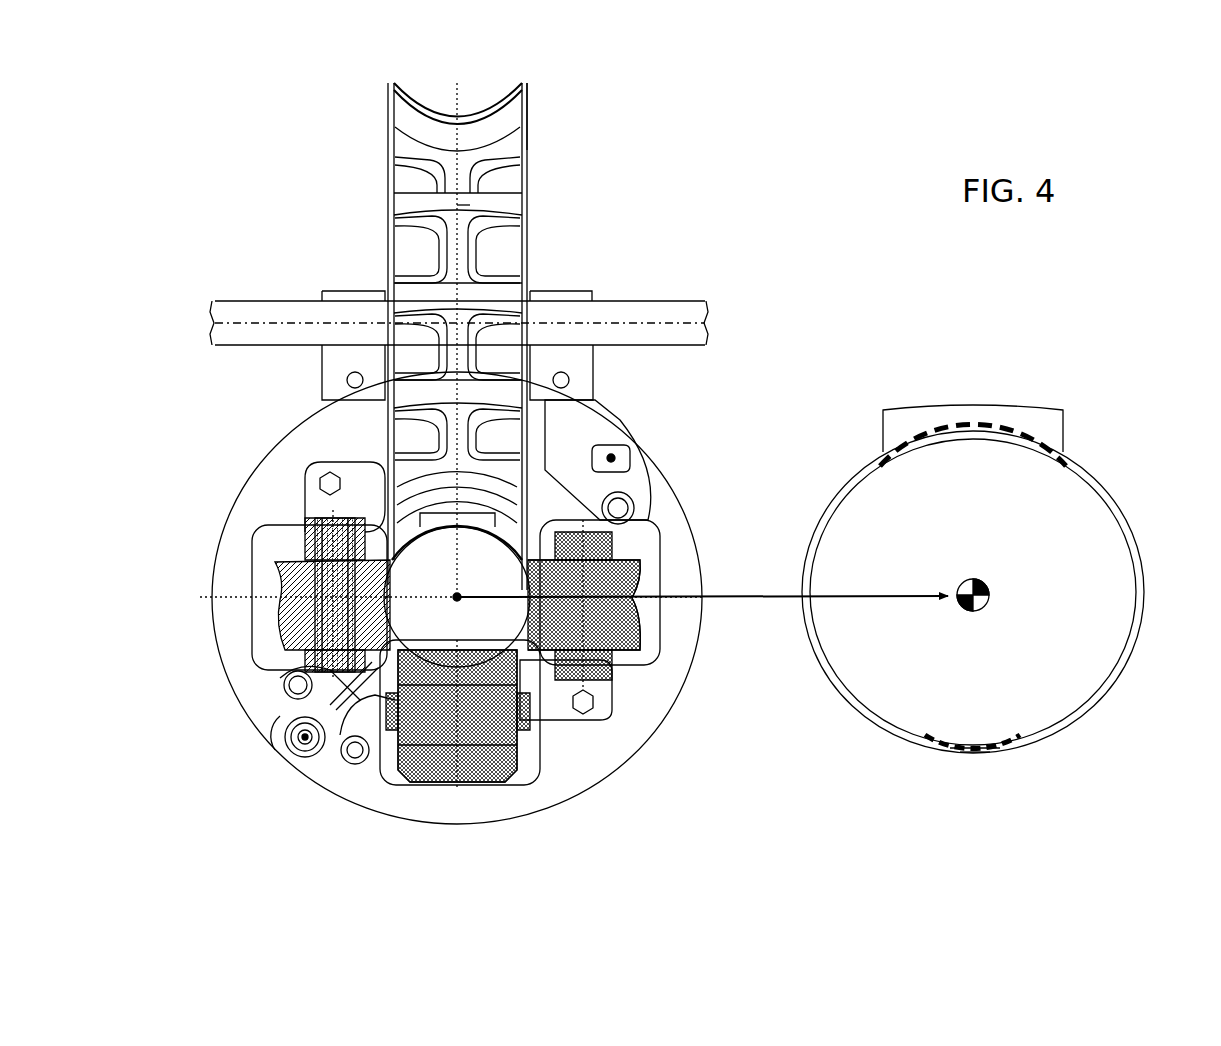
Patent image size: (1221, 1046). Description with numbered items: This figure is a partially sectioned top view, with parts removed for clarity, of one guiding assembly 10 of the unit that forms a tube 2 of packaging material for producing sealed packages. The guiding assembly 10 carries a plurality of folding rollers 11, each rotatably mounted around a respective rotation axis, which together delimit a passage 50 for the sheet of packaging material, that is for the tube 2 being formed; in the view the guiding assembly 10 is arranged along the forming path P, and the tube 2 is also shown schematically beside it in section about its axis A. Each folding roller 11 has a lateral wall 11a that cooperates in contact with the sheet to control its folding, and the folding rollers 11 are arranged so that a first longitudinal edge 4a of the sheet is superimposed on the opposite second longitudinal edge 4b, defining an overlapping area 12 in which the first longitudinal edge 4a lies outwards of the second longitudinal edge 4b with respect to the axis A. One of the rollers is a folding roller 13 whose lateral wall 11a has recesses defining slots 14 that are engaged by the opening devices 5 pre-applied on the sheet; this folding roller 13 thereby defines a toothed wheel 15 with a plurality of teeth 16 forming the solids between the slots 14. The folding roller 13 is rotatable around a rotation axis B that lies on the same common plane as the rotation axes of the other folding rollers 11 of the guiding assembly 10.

The tube 2 is at (1140, 640).
The first longitudinal edge 4a is at (985, 755).
The second longitudinal edge 4b is at (975, 745).
The opening device 5 is at (450, 515).
The guiding assembly 10 is at (265, 490).
The folding roller 11 is at (280, 620).
The lateral wall 11a is at (477, 204).
The overlapping area 12 is at (454, 658).
The folding roller 13 is at (532, 214).
The slot 14 is at (400, 110).
The toothed wheel 15 is at (530, 148).
The teeth 16 is at (470, 118).
The passage 50 is at (395, 598).
The axis A is at (985, 590).
The rotation axis B is at (667, 322).
The forming path P is at (457, 597).